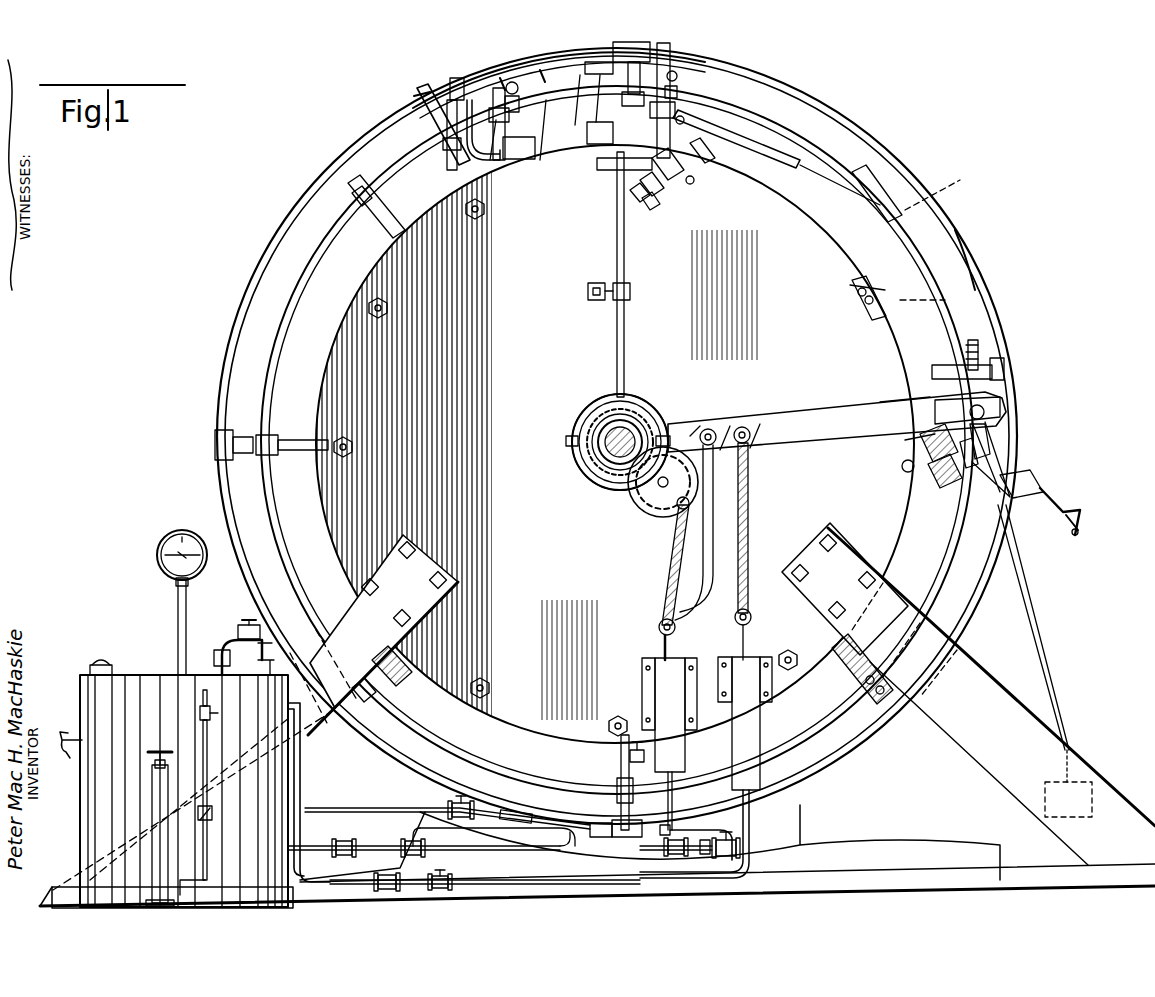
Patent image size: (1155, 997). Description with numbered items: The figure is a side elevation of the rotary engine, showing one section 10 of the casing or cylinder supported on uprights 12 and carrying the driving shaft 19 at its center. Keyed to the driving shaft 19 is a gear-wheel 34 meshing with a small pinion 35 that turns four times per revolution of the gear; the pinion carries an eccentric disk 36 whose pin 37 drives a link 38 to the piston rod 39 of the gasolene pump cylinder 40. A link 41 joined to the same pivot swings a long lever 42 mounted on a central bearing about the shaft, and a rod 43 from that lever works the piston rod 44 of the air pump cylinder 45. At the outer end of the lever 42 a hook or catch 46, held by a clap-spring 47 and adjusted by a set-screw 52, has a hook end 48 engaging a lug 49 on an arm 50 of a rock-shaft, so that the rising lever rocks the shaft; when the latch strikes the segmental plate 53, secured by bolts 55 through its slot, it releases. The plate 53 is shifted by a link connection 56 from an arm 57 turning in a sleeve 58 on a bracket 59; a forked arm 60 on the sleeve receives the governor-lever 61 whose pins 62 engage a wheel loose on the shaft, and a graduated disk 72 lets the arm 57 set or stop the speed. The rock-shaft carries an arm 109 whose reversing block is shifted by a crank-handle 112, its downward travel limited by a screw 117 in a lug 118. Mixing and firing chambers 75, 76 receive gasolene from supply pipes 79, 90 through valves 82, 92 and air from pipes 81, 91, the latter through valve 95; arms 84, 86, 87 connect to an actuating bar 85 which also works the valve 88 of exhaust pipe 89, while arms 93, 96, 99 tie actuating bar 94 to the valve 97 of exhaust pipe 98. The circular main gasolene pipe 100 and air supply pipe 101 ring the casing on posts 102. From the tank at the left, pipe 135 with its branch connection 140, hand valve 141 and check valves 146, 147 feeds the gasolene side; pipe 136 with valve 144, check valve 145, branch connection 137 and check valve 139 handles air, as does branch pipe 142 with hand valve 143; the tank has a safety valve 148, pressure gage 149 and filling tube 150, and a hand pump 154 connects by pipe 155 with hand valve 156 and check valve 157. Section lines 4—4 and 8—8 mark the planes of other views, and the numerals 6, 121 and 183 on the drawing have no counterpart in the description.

The section line 4— 4 is at (633, 838).
The handle 6 is at (1073, 526).
The section line 8— 8 is at (870, 396).
The cylinder section 10 is at (615, 444).
The uprights 12 is at (1015, 800).
The driving shaft 19 is at (632, 415).
The gear-wheel 34 is at (612, 488).
The pinion 35 is at (640, 505).
The disk 36 is at (645, 515).
The pin 37 is at (678, 510).
The link 38 is at (672, 573).
The piston rod 39 is at (660, 645).
The gasolene pump cylinder 40 is at (685, 745).
The link 41 is at (702, 622).
The long lever 42 is at (790, 420).
The rod 43 is at (748, 508).
The piston rod 44 is at (750, 630).
The air pump cylinder 45 is at (760, 748).
The hook or catch 46 is at (985, 448).
The clap-spring 47 is at (990, 432).
The hook end 48 is at (978, 470).
The lug 49 is at (958, 470).
The arm 50 is at (940, 478).
The set-screw 52 is at (945, 380).
The segmental plate 53 is at (870, 232).
The screws or bolts 55 is at (806, 192).
The link connection 56 is at (742, 145).
The arm 57 is at (708, 166).
The sleeve 58 is at (660, 190).
The bracket 59 is at (640, 214).
The forked arm 60 is at (612, 168).
The governor-lever 61 is at (624, 250).
The pins 62 is at (672, 430).
The graduated disk 72 is at (695, 182).
The mixing and firing chamber 75 is at (585, 135).
The mixing and firing chamber 76 is at (548, 160).
The gasolene supply pipe 79 is at (590, 108).
The air pipe 81 is at (670, 160).
The valve 82 is at (548, 68).
The arm 84 is at (590, 66).
The actuating bar 85 is at (520, 68).
The arm 86 is at (618, 92).
The arm 87 is at (428, 128).
The valve 88 is at (438, 152).
The exhaust pipe 89 is at (420, 88).
The gasolene supply pipe 90 is at (515, 125).
The air supply pipe 91 is at (500, 170).
The valve 92 is at (493, 88).
The arm 93 is at (510, 82).
The actuating bar 94 is at (678, 78).
The valve 95 is at (415, 100).
The arm 96 is at (448, 80).
The valve 97 is at (684, 120).
The exhaust pipe 98 is at (690, 50).
The arm 99 is at (680, 92).
The main pipe 100 is at (590, 838).
The air supply pipe 101 is at (975, 262).
The posts 102 is at (294, 440).
The arm 109 is at (1045, 486).
The crank-handle 112 is at (1070, 532).
The screw 117 is at (903, 466).
The lug 118 is at (918, 482).
The brace 121 is at (322, 738).
The pipe 135 is at (480, 852).
The pipe 136 is at (755, 855).
The branch connection 137 is at (730, 860).
The check valve 139 is at (672, 858).
The branch connection 140 is at (392, 809).
The hand valve 141 is at (475, 812).
The branch pipe 142 is at (232, 640).
The hand valve 143 is at (245, 622).
The valve 144 is at (472, 880).
The check valve 145 is at (378, 888).
The check valve 146 is at (345, 842).
The check valve 147 is at (418, 843).
The safety valve 148 is at (100, 665).
The pressure gage 149 is at (157, 557).
The filling tube 150 is at (266, 668).
The hand pump 154 is at (152, 840).
The pipe 155 is at (202, 730).
The hand valve 156 is at (200, 710).
The check valve 157 is at (204, 812).
The valve 183 is at (738, 842).